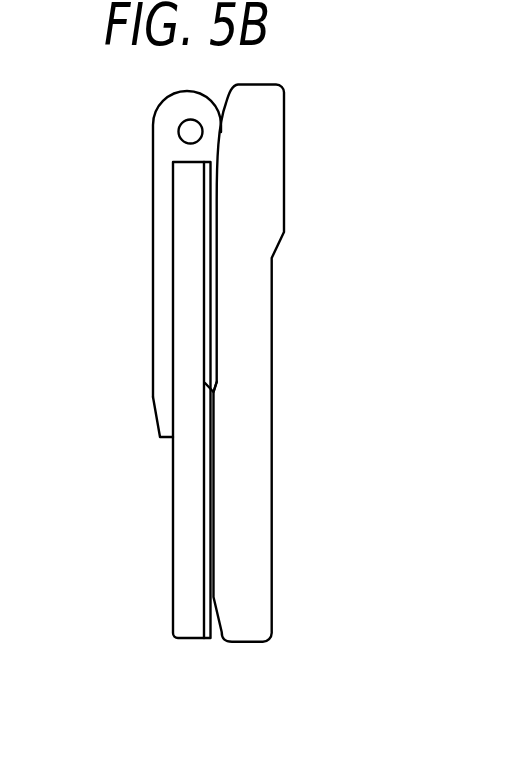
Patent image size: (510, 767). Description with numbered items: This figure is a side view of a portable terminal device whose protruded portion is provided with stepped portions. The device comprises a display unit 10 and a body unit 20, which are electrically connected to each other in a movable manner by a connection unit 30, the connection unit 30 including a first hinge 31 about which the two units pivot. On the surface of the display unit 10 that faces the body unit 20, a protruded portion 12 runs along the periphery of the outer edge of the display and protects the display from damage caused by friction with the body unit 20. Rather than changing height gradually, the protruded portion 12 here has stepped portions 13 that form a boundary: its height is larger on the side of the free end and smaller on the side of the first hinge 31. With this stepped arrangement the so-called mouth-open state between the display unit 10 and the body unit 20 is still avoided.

The display unit 10 is at (187, 570).
The protruded portion 12 is at (208, 545).
The stepped portions 13 is at (207, 390).
The body unit 20 is at (250, 492).
The connection unit 30 is at (158, 192).
The first hinge 31 is at (190, 130).